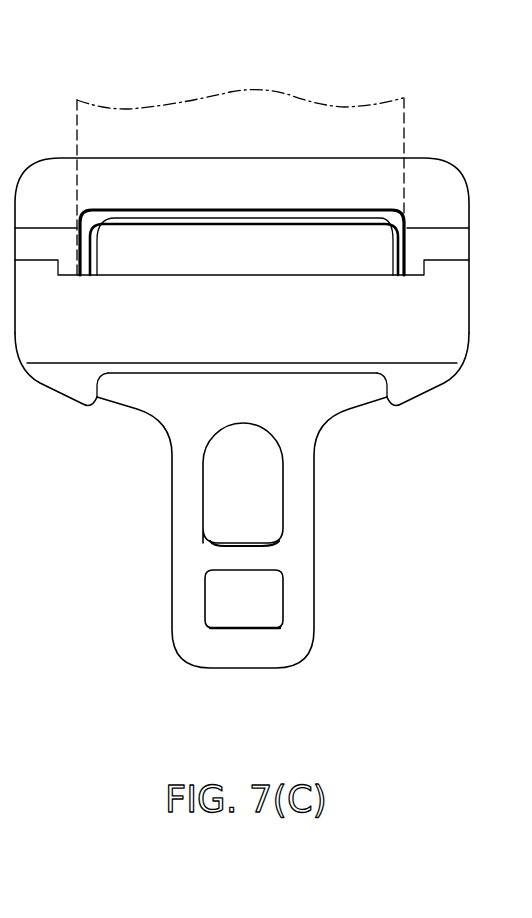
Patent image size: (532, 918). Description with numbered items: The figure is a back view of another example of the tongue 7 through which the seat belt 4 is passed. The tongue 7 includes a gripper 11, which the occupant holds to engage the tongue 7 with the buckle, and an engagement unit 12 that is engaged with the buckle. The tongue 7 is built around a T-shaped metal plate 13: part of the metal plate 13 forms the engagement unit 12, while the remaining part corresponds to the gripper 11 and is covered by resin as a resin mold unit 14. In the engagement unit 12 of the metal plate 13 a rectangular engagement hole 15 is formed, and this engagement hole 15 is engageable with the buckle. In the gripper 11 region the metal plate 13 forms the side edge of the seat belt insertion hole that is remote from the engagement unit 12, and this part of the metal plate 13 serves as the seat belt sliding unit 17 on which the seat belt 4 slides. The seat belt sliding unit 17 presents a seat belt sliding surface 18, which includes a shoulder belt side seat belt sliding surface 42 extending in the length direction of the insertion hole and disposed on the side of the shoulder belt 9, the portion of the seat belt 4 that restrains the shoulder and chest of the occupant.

The seat belt 4 is at (288, 93).
The tongue 7 is at (120, 476).
The shoulder belt 9 is at (406, 128).
The gripper 11 is at (440, 194).
The engagement unit 12 is at (297, 620).
The metal plate 13 is at (302, 530).
The resin mold unit 14 is at (52, 185).
The engagement hole 15 is at (207, 608).
The seat belt sliding unit 17 is at (205, 214).
The seat belt sliding surface 18 is at (207, 260).
The shoulder belt side seat belt sliding surface 42 is at (268, 252).